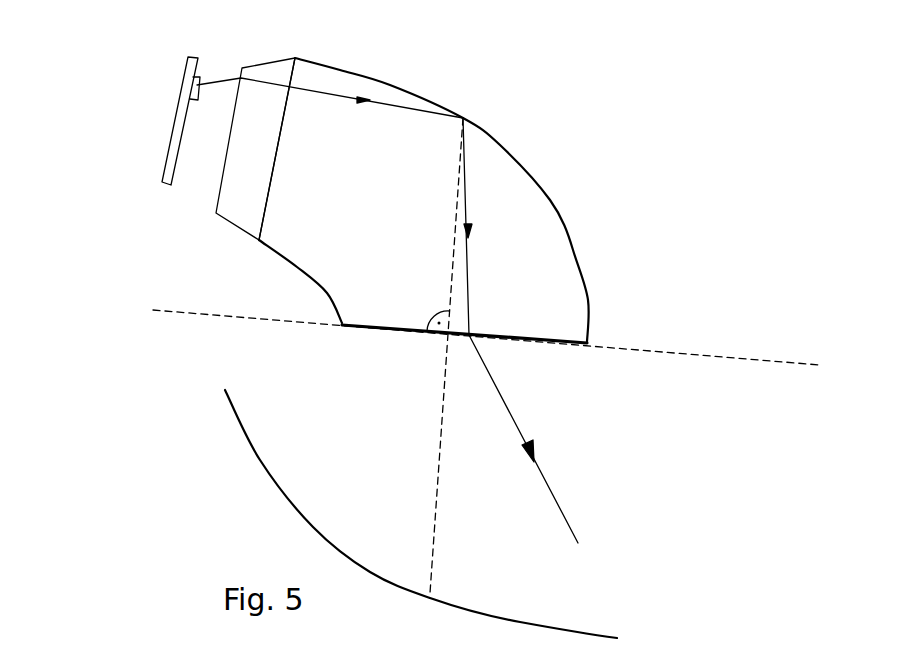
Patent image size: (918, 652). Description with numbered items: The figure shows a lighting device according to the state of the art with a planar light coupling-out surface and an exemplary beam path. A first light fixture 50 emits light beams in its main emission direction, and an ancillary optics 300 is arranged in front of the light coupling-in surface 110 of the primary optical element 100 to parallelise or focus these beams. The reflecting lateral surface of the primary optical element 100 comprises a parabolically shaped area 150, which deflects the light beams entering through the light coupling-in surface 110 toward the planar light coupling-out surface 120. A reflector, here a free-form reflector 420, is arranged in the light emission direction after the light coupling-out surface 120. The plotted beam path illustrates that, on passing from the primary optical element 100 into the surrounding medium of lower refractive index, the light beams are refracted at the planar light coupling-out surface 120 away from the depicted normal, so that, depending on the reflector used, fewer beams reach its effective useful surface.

The first light fixture 50 is at (187, 88).
The ancillary optics 300 is at (272, 75).
The light coupling-in surface 110 is at (270, 182).
The primary optical element 100 is at (368, 142).
The parabolically shaped area 150 is at (500, 145).
The light coupling-out surface 120 is at (393, 332).
The free-form reflector 420 is at (313, 527).